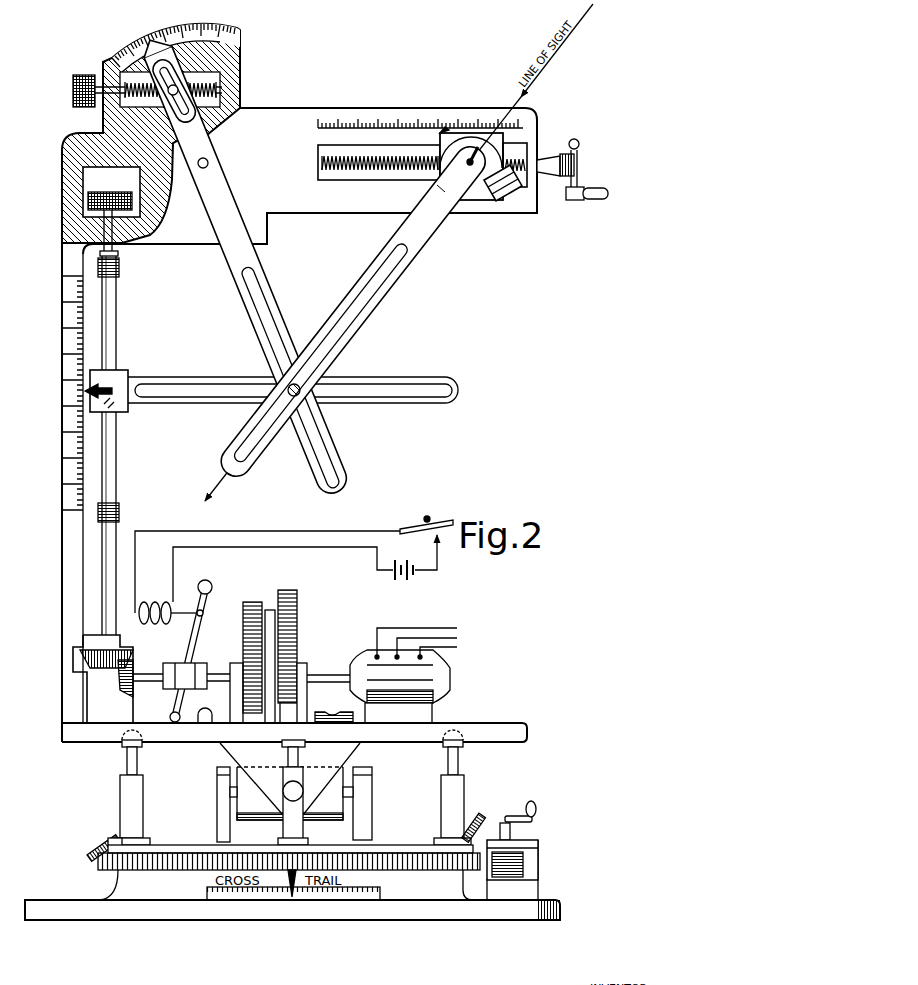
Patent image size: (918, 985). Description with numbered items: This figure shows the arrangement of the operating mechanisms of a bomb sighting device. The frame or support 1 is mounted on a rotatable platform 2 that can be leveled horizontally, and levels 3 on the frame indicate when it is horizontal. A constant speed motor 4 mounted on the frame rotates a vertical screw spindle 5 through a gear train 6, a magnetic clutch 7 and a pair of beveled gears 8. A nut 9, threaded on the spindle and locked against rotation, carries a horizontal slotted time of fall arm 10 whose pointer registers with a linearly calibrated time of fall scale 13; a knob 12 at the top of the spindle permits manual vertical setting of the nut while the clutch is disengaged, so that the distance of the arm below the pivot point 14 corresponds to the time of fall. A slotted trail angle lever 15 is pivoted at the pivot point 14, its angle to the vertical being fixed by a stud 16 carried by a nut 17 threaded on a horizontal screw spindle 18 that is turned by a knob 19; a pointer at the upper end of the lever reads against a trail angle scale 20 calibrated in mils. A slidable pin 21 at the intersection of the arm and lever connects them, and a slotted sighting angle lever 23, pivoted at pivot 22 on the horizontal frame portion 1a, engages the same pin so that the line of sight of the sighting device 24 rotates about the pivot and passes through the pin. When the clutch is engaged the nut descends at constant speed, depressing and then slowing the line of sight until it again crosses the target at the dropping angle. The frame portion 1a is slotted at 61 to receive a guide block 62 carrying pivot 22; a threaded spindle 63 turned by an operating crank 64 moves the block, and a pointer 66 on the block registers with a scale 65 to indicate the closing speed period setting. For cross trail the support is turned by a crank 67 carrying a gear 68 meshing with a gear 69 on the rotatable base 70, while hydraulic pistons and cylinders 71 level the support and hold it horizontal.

The frame or support 1 is at (498, 732).
The horizontally disposed supporting portion 1a is at (340, 200).
The rotatable platform 2 is at (420, 848).
The levels 3 is at (203, 712).
The constant speed motor 4 is at (445, 681).
The screw spindle 5 is at (119, 268).
The gear train 6 is at (308, 611).
The magnetic clutch 7 is at (214, 596).
The beveled gears 8 is at (112, 668).
The nut 9 is at (125, 372).
The time of fall indicating arm 10 is at (432, 378).
The knob 12 is at (120, 191).
The time of fall scale 13 is at (75, 380).
The pivot point 14 is at (210, 163).
The trail angle setting lever 15 is at (275, 303).
The stud 16 is at (183, 80).
The nut 17 is at (182, 70).
The horizontal screw spindle 18 is at (150, 87).
The knob 19 is at (73, 96).
The trail angle scale 20 is at (212, 35).
The pin 21 is at (315, 403).
The pivot point 22 is at (437, 192).
The sighting angle determining lever 23 is at (378, 304).
The sighting device 24 is at (494, 180).
The slot 61 is at (328, 177).
The guide block 62 is at (458, 140).
The threaded spindle 63 is at (322, 163).
The operating crank 64 is at (582, 186).
The scale 65 is at (394, 102).
The pointer 66 is at (436, 128).
The crank 67 is at (538, 818).
The gear 68 is at (538, 865).
The gear 69 is at (98, 862).
The rotatable base 70 is at (105, 845).
The hydraulic pistons and cylinders 71 is at (125, 795).